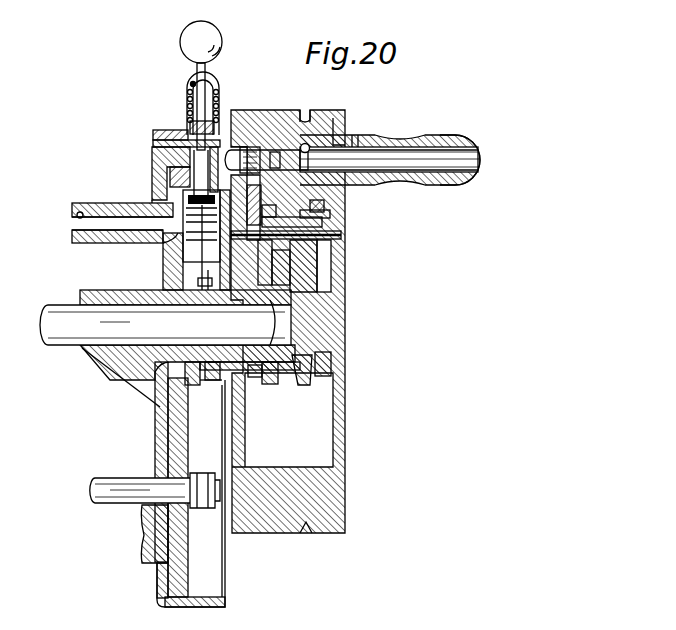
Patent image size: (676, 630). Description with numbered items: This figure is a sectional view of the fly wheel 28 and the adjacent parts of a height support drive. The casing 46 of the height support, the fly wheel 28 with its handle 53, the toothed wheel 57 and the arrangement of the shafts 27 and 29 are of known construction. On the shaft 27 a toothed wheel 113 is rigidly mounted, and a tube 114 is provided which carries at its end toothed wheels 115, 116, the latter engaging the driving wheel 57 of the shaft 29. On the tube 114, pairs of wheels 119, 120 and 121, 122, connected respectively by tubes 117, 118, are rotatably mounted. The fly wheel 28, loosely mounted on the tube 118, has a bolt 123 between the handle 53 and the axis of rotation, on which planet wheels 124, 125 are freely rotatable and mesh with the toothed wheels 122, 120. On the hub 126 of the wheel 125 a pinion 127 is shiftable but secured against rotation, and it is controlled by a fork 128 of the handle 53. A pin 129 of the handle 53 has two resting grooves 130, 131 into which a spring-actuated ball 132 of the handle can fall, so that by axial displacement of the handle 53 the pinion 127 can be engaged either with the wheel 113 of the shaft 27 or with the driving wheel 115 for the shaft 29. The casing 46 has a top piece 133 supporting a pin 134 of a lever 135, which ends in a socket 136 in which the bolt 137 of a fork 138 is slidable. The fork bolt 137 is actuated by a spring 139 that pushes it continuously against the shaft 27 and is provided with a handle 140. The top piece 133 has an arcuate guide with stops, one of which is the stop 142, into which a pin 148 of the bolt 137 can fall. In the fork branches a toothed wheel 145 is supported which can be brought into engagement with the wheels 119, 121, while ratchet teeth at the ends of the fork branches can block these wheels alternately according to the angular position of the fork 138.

The handle 140 is at (222, 46).
The spring 139 is at (192, 84).
The socket 136 is at (219, 90).
The bolt 137 is at (190, 125).
The stop 142 is at (163, 130).
The pin 148 is at (153, 142).
The top piece 133 is at (160, 183).
The lever 135 is at (172, 172).
The pin 134 is at (72, 222).
The fork 138 is at (183, 212).
The toothed wheel 145 is at (202, 288).
The fly wheel 28 is at (285, 530).
The spring-actuated ball 132 is at (306, 135).
The pin 129 is at (424, 160).
The handle 53 is at (460, 136).
The resting groove 130 is at (290, 158).
The planet wheel 124 is at (260, 205).
The planet wheel 125 is at (280, 212).
The hub 126 is at (286, 227).
The resting groove 131 is at (335, 192).
The fork 128 is at (324, 204).
The bolt 123 is at (341, 235).
The pinion 127 is at (318, 256).
The tube 114 is at (142, 360).
The shaft 27 is at (60, 342).
The tube 117 is at (228, 362).
The tube 118 is at (266, 345).
The toothed wheel 116 is at (160, 388).
The wheel 119 is at (195, 385).
The wheel 121 is at (212, 380).
The toothed wheel 122 is at (253, 377).
The toothed wheel 120 is at (270, 384).
The toothed wheel 115 is at (300, 384).
The toothed wheel 113 is at (318, 375).
The toothed wheel 57 is at (170, 575).
The casing 46 is at (196, 607).
The shaft 29 is at (112, 500).